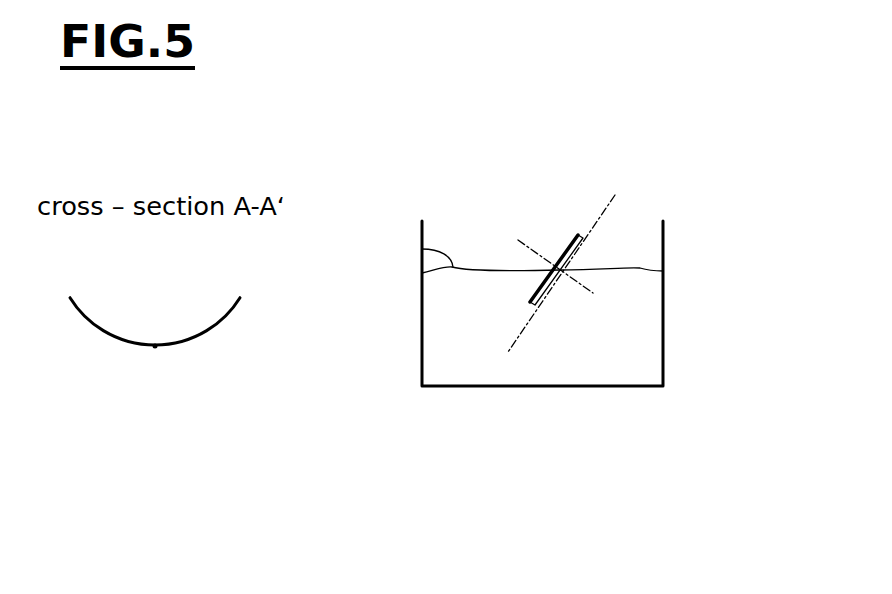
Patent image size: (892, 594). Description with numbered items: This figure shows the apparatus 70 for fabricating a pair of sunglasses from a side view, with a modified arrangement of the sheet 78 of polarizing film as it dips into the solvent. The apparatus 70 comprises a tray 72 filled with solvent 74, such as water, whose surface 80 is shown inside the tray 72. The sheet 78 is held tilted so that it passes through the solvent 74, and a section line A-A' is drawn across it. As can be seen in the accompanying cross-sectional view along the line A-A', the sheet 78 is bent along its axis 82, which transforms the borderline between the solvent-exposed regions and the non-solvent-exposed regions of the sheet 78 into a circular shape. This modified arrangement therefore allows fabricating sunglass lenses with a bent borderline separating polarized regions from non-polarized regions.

The apparatus 70 is at (459, 290).
The tray 72 is at (662, 358).
The solvent 74 is at (647, 291).
The sheet of polarizing film 78 is at (106, 336).
The liquid surface 80 is at (422, 249).
The axis 82 is at (155, 347).